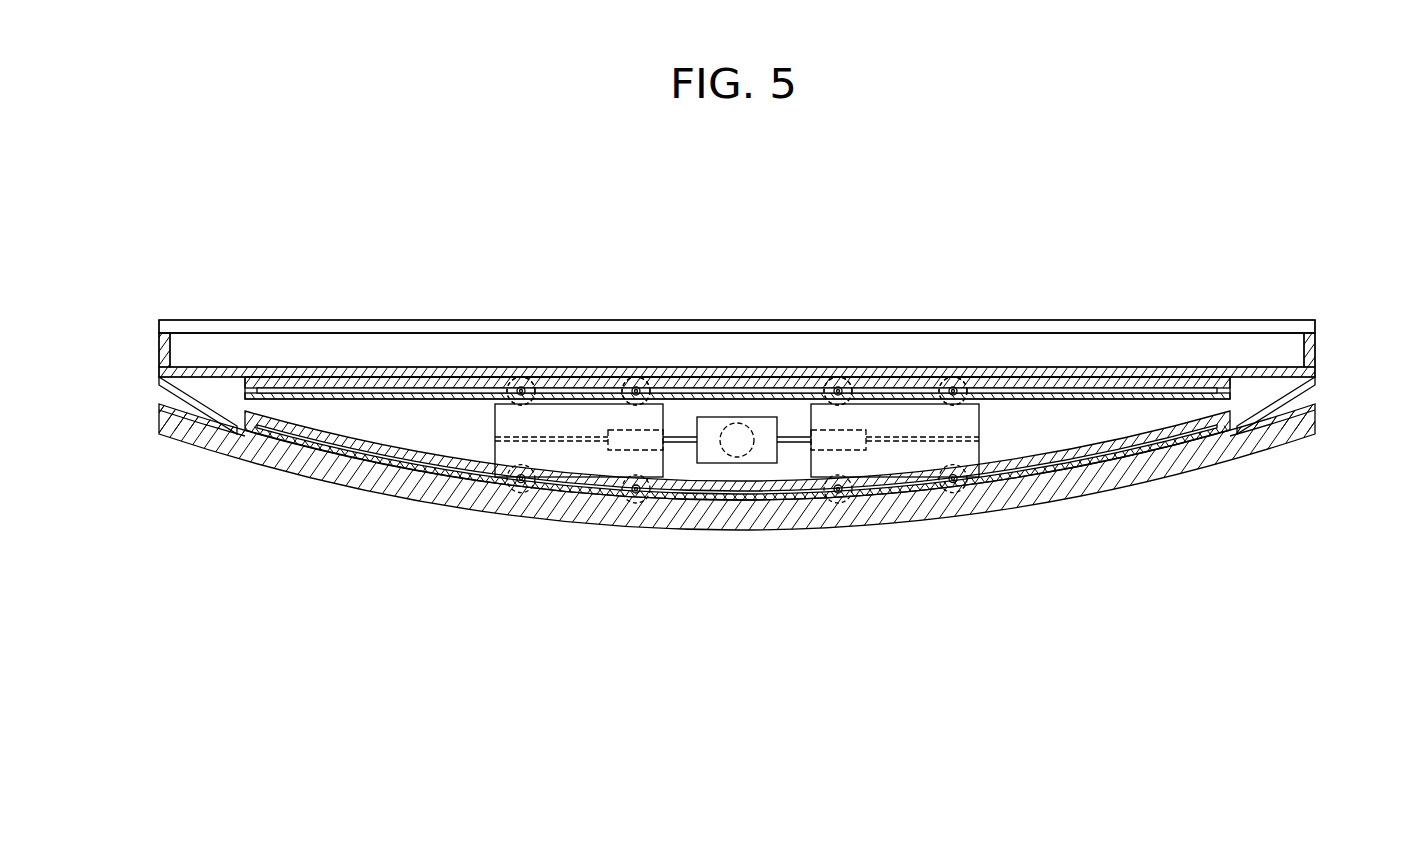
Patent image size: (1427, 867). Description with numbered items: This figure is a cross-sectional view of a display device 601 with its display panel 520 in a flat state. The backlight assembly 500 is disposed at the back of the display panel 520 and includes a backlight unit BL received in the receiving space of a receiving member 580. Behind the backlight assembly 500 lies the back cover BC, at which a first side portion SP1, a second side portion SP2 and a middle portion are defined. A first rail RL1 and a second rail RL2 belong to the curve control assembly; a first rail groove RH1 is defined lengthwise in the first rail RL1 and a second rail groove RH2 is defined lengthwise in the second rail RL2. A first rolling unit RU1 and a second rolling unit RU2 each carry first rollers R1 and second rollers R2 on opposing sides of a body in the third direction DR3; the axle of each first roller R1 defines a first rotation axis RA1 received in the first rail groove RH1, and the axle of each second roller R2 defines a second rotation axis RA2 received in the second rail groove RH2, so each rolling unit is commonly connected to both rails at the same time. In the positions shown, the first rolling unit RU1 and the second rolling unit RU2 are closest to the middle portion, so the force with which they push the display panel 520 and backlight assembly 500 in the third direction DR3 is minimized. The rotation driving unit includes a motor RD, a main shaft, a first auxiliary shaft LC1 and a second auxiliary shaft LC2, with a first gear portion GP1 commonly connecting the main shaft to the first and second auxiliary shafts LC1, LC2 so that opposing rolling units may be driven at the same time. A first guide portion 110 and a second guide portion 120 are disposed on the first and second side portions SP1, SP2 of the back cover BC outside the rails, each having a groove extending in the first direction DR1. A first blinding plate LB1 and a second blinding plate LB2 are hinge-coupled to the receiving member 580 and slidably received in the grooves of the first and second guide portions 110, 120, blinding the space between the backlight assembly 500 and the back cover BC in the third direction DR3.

The display device 601 is at (1216, 215).
The backlight assembly 500 is at (1128, 243).
The display panel 520 is at (370, 328).
The backlight unit BL is at (1047, 350).
The receiving member 580 is at (1097, 372).
The first rolling unit RU1 is at (553, 238).
The second rolling unit RU2 is at (872, 238).
The first roller R1 is at (508, 384).
The first rotation axis RA1 is at (521, 378).
The second roller R2 is at (490, 491).
The second rotation axis RA2 is at (521, 482).
The first rail RL1 is at (264, 386).
The first rail groove RH1 is at (310, 392).
The second rail RL2 is at (262, 433).
The second rail groove RH2 is at (315, 440).
The first blinding plate LB1 is at (176, 394).
The second blinding plate LB2 is at (1297, 390).
The first guide portion 110 is at (164, 407).
The second guide portion 120 is at (1306, 411).
The back cover BC is at (868, 510).
The first side portion SP1 is at (196, 432).
The second side portion SP2 is at (1268, 435).
The first auxiliary shaft LC1 is at (680, 442).
The second auxiliary shaft LC2 is at (797, 442).
The motor RD is at (719, 460).
The first gear portion GP1 is at (762, 456).
The first direction DR1 is at (95, 663).
The third direction DR3 is at (95, 663).